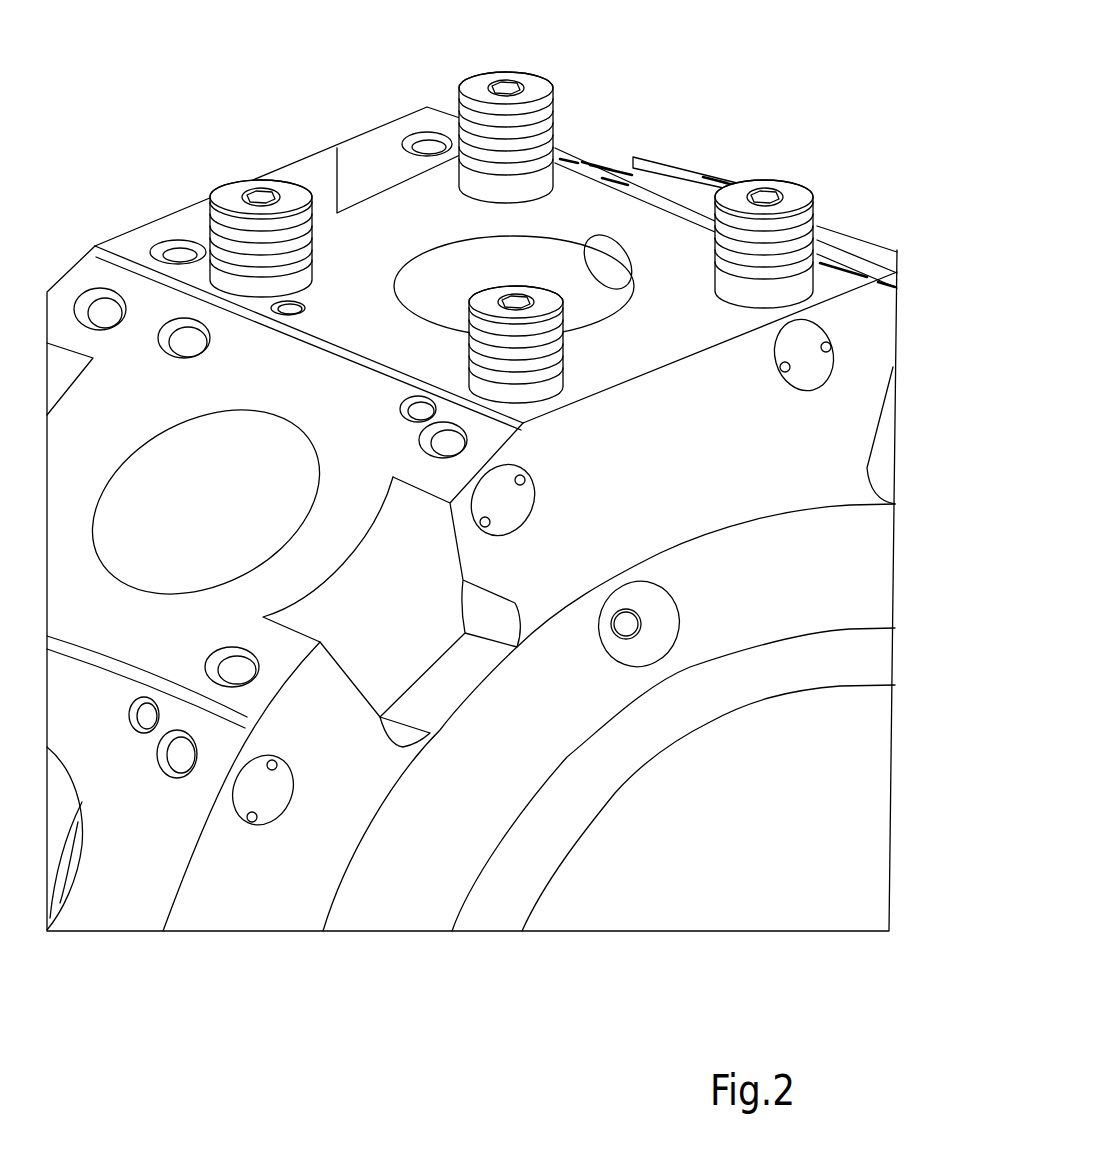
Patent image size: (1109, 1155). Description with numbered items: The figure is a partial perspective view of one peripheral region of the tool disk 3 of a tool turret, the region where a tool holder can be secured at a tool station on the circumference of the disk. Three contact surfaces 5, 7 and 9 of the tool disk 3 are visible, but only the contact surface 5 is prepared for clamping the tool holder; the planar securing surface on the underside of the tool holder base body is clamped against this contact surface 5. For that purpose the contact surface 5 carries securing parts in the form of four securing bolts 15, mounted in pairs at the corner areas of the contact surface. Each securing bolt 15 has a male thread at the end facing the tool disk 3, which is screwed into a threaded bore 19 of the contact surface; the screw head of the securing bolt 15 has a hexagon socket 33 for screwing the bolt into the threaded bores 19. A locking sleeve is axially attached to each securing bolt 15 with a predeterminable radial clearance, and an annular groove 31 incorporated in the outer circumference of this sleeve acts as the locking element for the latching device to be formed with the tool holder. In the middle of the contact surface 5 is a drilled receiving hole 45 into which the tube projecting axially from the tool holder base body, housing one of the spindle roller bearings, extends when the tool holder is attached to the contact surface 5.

The tool disk 3 is at (767, 450).
The contact surface 5 is at (363, 215).
The contact surface 7 is at (140, 305).
The contact surface 9 is at (122, 887).
The securing bolt 15 is at (228, 200).
The threaded bore 19 is at (160, 340).
The annular groove 31 is at (295, 245).
The hexagon socket 33 is at (267, 193).
The receiving hole 45 is at (585, 257).